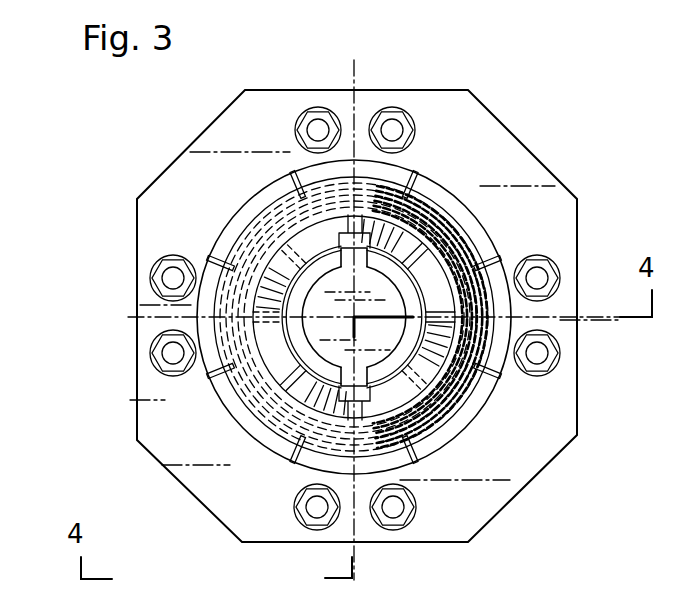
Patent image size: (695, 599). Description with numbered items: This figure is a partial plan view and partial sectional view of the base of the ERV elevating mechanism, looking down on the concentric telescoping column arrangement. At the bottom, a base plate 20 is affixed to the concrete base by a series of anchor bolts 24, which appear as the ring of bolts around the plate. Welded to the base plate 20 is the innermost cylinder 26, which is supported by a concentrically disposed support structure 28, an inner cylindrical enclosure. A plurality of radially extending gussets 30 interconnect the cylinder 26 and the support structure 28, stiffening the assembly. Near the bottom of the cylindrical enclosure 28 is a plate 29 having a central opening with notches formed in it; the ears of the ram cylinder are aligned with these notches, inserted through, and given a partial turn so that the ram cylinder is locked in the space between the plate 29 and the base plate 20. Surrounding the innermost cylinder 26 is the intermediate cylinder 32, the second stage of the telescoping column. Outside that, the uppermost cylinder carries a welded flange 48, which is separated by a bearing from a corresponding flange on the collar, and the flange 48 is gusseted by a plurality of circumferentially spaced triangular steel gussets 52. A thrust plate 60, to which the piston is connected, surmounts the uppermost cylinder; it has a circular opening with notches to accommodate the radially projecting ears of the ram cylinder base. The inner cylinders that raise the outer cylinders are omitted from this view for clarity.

The base plate 20 is at (482, 98).
The anchor bolts 24 is at (392, 128).
The innermost cylinder 26 is at (482, 254).
The support structure 28 is at (466, 238).
The plate 29 is at (452, 438).
The radially extending gussets 30 is at (206, 266).
The intermediate cylinder 32 is at (473, 212).
The flange 48 is at (292, 450).
The triangular steel gussets 52 is at (300, 184).
The thrust plate 60 is at (224, 378).